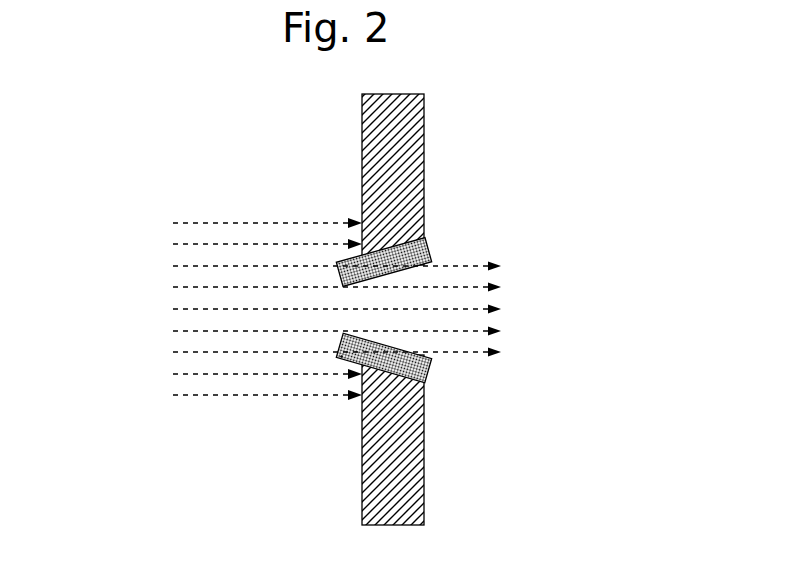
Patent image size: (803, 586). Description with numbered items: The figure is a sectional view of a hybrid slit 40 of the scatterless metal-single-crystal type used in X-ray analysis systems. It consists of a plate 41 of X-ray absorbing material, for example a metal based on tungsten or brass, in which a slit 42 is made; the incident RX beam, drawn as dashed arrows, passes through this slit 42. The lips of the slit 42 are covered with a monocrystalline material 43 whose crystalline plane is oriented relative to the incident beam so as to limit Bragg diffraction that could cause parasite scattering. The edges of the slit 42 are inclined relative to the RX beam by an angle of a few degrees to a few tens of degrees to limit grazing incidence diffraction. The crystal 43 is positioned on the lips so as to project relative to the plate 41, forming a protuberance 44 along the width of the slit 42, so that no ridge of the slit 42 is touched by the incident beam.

The hybrid slit 40 is at (288, 150).
The plate 41 is at (425, 145).
The slit 42 is at (336, 319).
The monocrystalline material 43 is at (415, 373).
The protuberance 44 is at (341, 357).